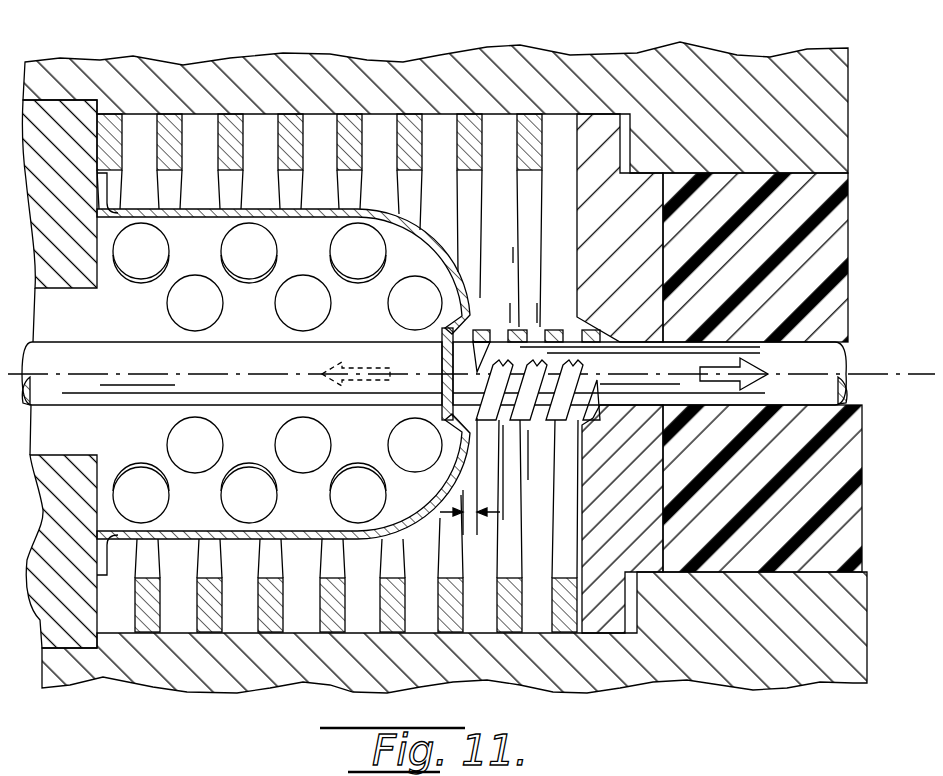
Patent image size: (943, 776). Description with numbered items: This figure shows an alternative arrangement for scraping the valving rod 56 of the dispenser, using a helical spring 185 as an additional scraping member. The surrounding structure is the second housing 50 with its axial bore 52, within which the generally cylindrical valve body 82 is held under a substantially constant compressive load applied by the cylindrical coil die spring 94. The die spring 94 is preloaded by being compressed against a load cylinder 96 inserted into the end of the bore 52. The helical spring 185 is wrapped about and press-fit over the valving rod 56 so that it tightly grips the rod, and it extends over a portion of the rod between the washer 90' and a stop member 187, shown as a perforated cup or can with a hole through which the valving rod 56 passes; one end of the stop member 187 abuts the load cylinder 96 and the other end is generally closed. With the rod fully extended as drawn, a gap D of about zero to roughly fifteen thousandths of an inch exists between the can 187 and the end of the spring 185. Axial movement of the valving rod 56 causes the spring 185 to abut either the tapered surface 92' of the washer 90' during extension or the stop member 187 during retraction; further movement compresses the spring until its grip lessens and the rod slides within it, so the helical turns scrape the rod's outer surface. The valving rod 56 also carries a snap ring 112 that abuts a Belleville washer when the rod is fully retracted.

The second housing 50 is at (682, 652).
The axial bore 52 is at (527, 613).
The valving rod 56 is at (150, 355).
The valve body 82 is at (737, 557).
The washer 90' is at (651, 369).
The tapered surface 92' is at (560, 421).
The die spring 94 is at (319, 169).
The load cylinder 96 is at (63, 115).
The snap ring 112 is at (442, 340).
The helical spring 185 is at (550, 327).
The stop member 187 is at (453, 270).
The gap D is at (488, 476).